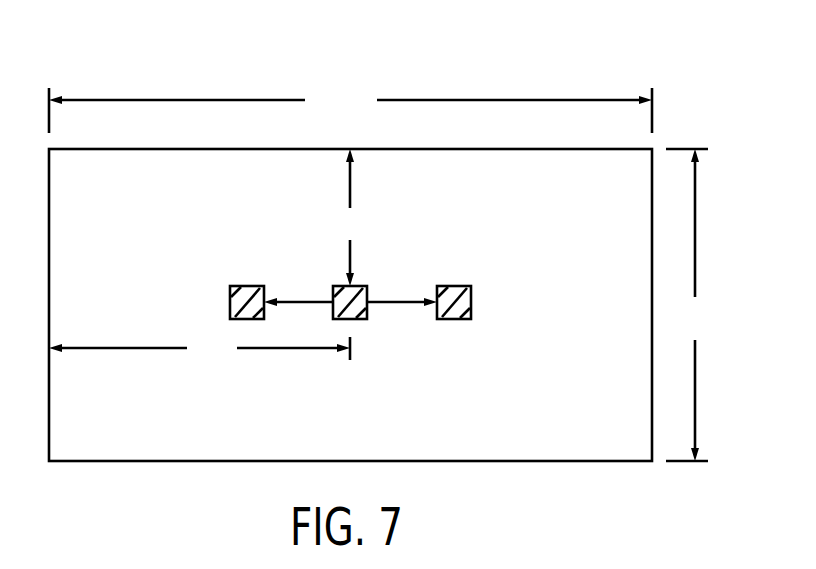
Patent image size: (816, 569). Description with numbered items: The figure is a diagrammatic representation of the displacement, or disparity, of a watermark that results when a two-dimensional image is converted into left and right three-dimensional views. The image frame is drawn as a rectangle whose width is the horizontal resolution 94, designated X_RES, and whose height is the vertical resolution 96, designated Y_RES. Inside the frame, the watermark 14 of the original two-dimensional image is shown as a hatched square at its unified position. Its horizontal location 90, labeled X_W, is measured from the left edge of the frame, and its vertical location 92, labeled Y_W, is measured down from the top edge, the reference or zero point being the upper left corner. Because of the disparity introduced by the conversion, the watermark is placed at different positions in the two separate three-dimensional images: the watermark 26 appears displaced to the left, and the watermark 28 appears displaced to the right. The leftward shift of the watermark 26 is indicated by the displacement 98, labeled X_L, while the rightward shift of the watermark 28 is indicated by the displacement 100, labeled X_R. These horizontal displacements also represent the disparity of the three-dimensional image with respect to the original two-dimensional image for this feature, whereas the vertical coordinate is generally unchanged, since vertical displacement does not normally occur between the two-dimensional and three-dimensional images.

The watermark 14 is at (341, 285).
The watermark 26 is at (230, 293).
The watermark 28 is at (471, 294).
The horizontal location 90 is at (158, 349).
The vertical location 92 is at (351, 191).
The horizontal resolution 94 is at (510, 100).
The vertical resolution 96 is at (696, 230).
The shift of watermark location 98 is at (293, 301).
The shift of watermark location 100 is at (398, 305).